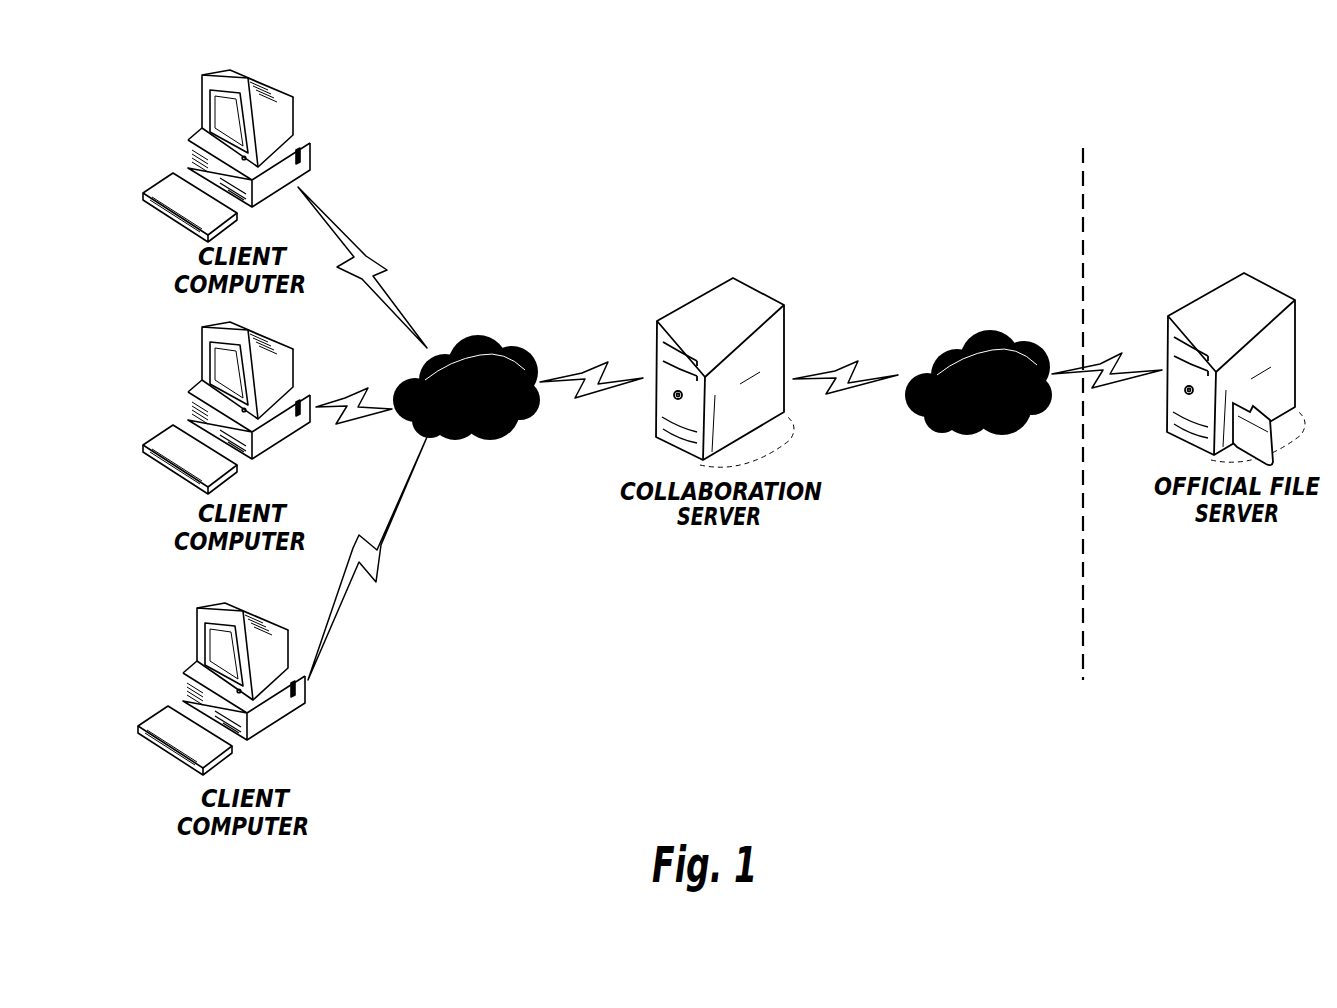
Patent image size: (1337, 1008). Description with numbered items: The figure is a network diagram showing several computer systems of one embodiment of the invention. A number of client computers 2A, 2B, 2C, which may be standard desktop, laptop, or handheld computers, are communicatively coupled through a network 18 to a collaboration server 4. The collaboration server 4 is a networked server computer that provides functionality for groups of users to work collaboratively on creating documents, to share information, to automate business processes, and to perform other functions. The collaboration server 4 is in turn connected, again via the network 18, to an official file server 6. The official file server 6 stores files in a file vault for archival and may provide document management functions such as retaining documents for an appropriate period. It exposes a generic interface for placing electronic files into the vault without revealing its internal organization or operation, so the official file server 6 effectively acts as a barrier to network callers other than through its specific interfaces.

The client computer 2A is at (297, 142).
The client computer 2B is at (283, 372).
The client computer 2C is at (305, 700).
The network 18 is at (500, 347).
The collaboration server 4 is at (738, 287).
The official file server 6 is at (1242, 280).